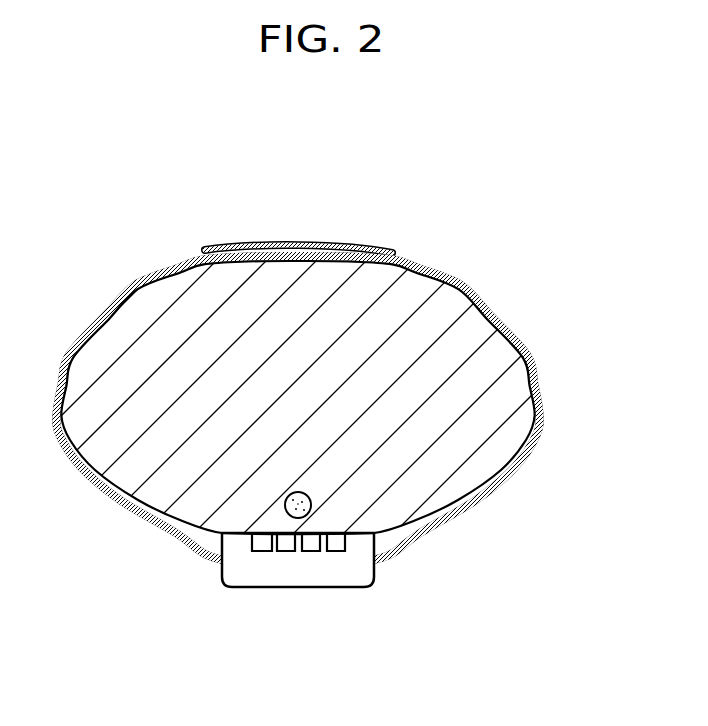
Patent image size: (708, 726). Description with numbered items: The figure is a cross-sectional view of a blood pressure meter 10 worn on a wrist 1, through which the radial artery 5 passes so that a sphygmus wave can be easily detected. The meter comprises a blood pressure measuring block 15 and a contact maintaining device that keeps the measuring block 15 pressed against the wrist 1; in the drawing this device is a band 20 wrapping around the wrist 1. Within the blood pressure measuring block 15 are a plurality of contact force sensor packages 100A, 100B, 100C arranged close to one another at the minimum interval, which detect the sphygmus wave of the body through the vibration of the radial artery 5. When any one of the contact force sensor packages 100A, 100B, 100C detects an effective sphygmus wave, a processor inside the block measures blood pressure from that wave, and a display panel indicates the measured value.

The wrist 1 is at (108, 452).
The radial artery 5 is at (285, 504).
The blood pressure meter 10 is at (335, 451).
The blood pressure measuring block 15 is at (331, 588).
The band 20 is at (543, 403).
The contact force sensor package 100A is at (263, 551).
The contact force sensor package 100B is at (286, 542).
The contact force sensor package 100C is at (323, 542).